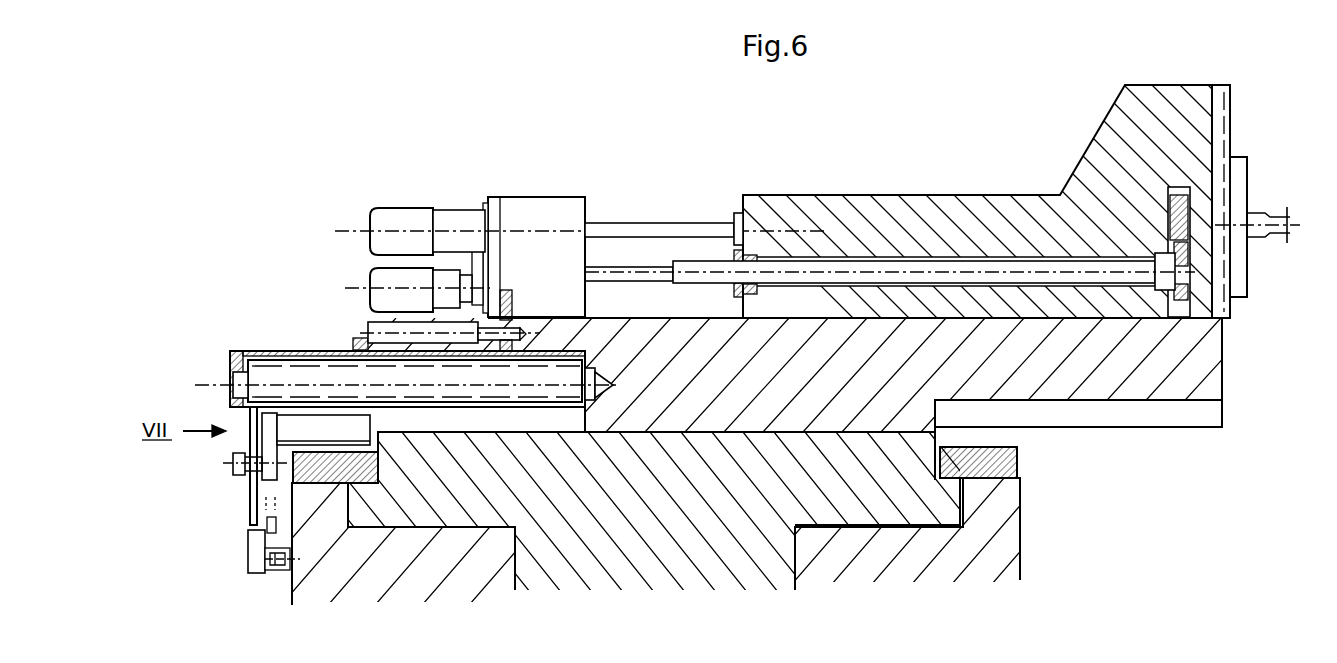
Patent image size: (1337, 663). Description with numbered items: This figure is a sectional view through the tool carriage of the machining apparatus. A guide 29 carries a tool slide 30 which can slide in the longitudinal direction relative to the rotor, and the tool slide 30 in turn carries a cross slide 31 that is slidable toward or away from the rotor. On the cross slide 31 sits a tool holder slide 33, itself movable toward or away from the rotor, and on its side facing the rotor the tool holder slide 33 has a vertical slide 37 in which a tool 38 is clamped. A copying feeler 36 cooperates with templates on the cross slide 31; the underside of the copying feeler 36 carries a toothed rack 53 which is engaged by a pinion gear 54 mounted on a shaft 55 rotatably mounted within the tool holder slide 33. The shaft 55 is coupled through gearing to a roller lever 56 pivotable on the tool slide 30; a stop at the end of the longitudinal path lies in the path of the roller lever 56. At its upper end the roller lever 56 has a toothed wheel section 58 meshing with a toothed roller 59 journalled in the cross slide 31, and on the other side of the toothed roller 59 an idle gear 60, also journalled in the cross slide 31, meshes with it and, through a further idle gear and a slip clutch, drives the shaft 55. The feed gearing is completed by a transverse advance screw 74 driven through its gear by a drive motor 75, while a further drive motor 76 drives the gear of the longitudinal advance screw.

The guide 29 is at (413, 579).
The tool slide 30 is at (497, 492).
The cross slide 31 is at (827, 391).
The tool holder slide 33 is at (997, 233).
The copying feeler 36 is at (1178, 215).
The vertical slide 37 is at (1230, 110).
The tool 38 is at (1257, 230).
The toothed rack 53 is at (1185, 250).
The pinion gear 54 is at (1187, 292).
The shaft 55 is at (1110, 277).
The roller lever 56 is at (255, 502).
The toothed wheel section 58 is at (255, 408).
The toothed roller 59 is at (298, 375).
The idle gear 60 is at (511, 297).
The transverse advance screw 74 is at (658, 225).
The drive motor 75 is at (407, 218).
The further drive motor 76 is at (390, 275).